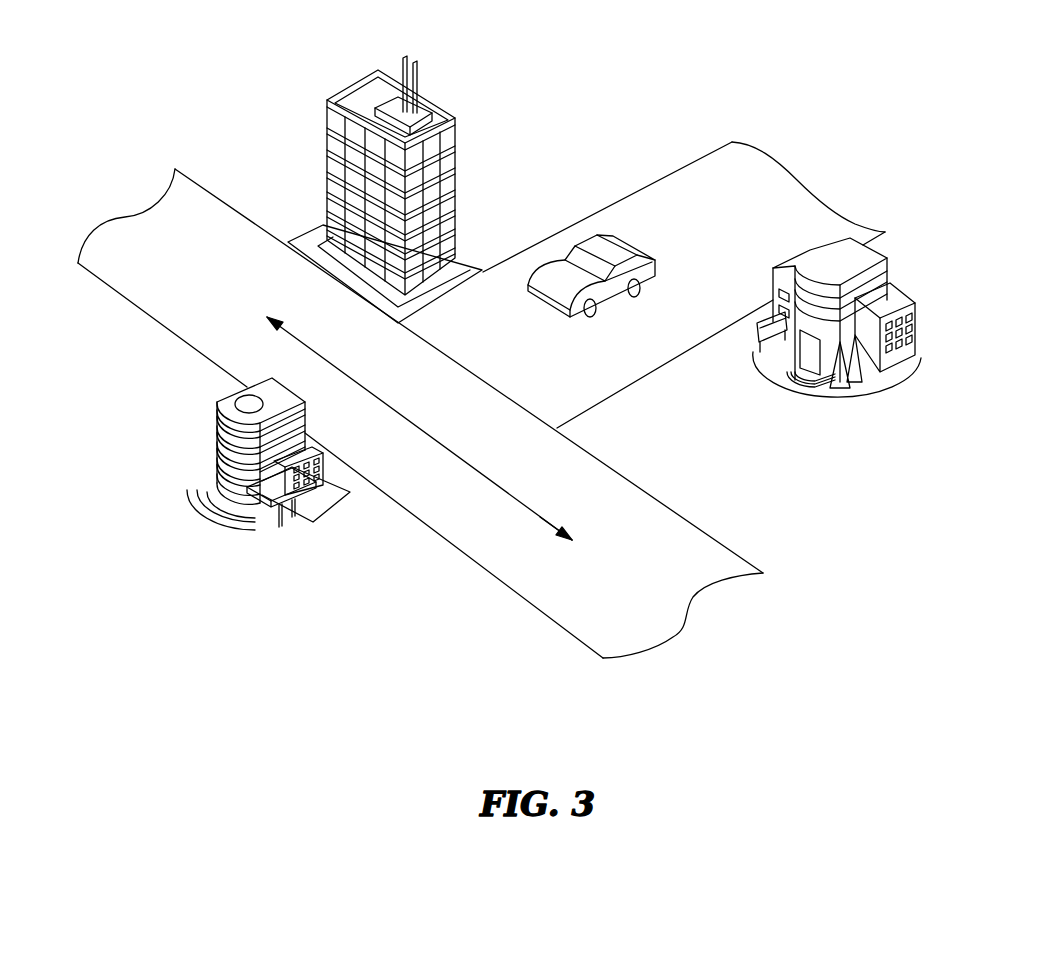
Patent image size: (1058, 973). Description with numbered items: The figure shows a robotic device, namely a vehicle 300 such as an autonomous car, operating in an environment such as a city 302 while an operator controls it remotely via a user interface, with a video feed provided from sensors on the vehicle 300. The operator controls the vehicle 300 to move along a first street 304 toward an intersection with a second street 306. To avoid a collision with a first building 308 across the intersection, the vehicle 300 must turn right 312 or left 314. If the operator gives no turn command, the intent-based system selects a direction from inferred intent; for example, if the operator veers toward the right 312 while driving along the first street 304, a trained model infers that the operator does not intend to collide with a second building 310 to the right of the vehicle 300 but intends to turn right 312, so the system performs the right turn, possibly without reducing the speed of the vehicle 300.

The vehicle 300 is at (657, 268).
The city 302 is at (490, 370).
The first street 304 is at (793, 217).
The second street 306 is at (627, 616).
The first building 308 is at (307, 507).
The second building 310 is at (457, 140).
The right 312 is at (282, 320).
The left 314 is at (563, 530).